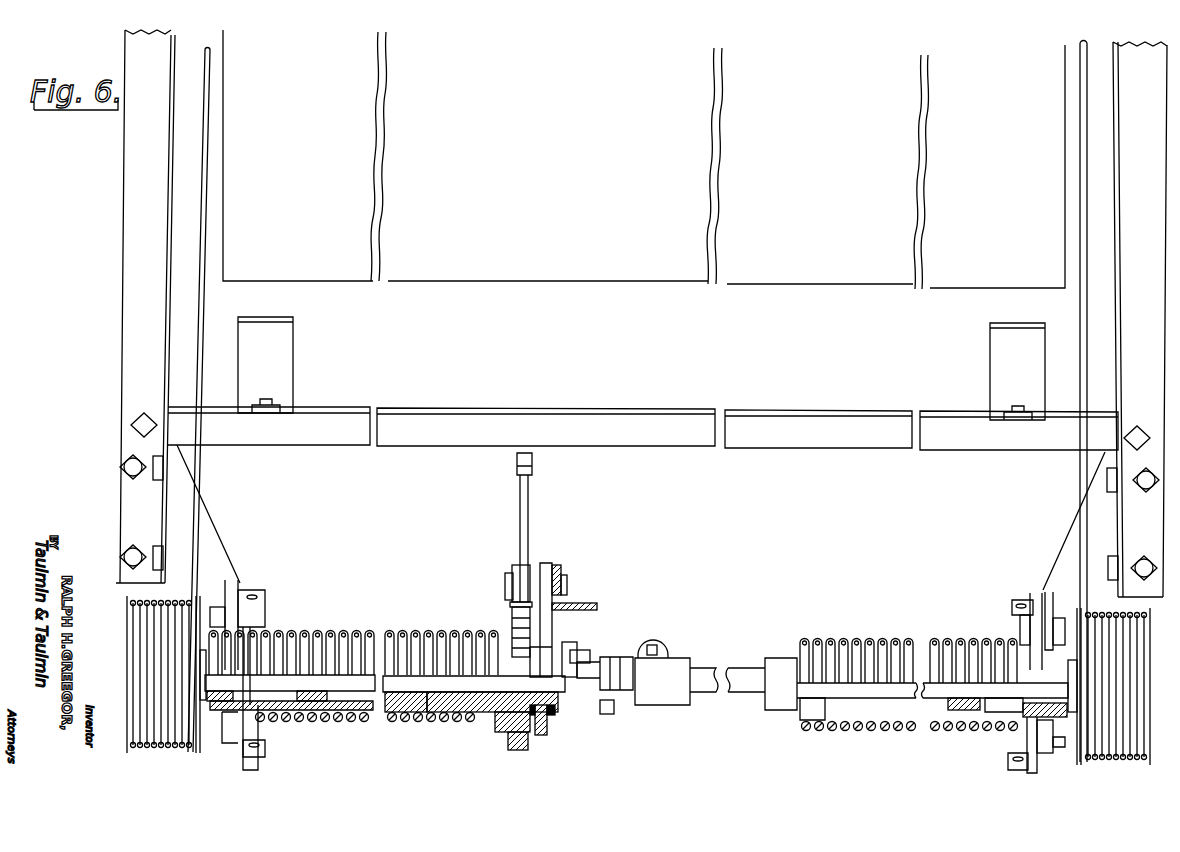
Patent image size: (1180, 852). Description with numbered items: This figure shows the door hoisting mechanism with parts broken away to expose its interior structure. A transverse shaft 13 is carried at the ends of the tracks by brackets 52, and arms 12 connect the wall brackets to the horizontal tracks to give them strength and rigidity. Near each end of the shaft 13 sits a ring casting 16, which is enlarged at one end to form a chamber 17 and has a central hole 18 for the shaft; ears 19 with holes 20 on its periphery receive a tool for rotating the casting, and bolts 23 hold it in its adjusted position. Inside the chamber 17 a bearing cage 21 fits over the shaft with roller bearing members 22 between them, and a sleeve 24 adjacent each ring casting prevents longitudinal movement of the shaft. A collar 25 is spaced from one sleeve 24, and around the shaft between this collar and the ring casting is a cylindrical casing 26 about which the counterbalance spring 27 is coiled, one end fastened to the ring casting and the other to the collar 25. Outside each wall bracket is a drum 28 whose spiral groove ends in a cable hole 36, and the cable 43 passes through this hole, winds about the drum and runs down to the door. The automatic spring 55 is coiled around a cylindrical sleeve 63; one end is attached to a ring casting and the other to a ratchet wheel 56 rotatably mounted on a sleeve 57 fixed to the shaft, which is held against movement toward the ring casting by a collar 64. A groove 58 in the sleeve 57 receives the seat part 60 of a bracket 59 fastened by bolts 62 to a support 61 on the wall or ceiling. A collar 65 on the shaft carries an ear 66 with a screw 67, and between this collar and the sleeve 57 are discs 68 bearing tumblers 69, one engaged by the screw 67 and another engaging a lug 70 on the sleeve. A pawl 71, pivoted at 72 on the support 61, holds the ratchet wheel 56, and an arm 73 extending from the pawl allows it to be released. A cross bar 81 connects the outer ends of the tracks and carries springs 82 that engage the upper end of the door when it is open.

The arm 12 is at (126, 246).
The transverse shaft 13 is at (726, 694).
The ring casting 16 is at (232, 580).
The chamber 17 is at (260, 708).
The central hole 18 is at (990, 715).
The ear 19 is at (262, 596).
The hole 20 is at (254, 594).
The bearing cage 21 is at (207, 712).
The roller bearing member 22 is at (220, 745).
The bolt 23 is at (262, 622).
The sleeve 24 is at (340, 722).
The collar 25 is at (772, 658).
The cylindrical casing 26 is at (840, 730).
The counterbalance spring 27 is at (855, 640).
The drum 28 is at (147, 748).
The cable hole 36 is at (130, 678).
The cable 43 is at (208, 223).
The bracket 52 is at (641, 517).
The automatic spring 55 is at (430, 634).
The ratchet wheel 56 is at (518, 750).
The sleeve 57 is at (556, 712).
The groove 58 is at (547, 714).
The bracket 59 is at (547, 563).
The seat part 60 is at (542, 736).
The support 61 is at (585, 602).
The bolt 62 is at (563, 584).
The cylindrical sleeve 63 is at (390, 714).
The collar 64 is at (440, 714).
The collar 65 is at (686, 660).
The ear 66 is at (660, 645).
The screw 67 is at (652, 644).
The disc 68 is at (618, 657).
The tumbler 69 is at (586, 650).
The lug 70 is at (566, 648).
The pawl 71 is at (510, 607).
The pivot 72 is at (505, 582).
The arm 73 is at (518, 526).
The cross bar 81 is at (603, 412).
The spring 82 is at (280, 366).